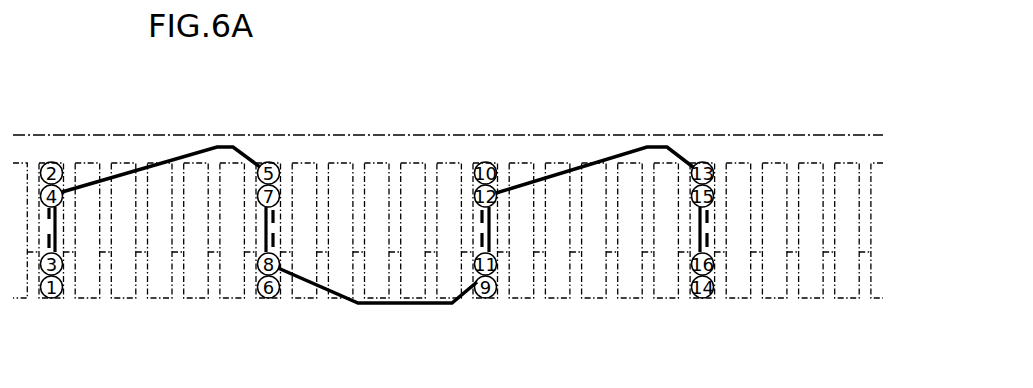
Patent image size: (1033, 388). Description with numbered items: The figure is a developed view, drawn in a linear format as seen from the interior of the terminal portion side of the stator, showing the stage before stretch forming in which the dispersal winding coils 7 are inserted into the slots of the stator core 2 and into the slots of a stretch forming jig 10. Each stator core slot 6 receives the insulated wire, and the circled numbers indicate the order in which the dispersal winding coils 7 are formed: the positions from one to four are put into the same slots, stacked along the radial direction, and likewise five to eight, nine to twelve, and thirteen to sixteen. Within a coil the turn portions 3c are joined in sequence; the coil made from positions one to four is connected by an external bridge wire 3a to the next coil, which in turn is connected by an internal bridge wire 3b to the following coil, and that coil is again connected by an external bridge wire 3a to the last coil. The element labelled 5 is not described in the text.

The stator core 2 is at (138, 146).
The external bridge wire 3a is at (232, 147).
The internal bridge wire 3b is at (370, 305).
The turn portion 3c is at (57, 232).
The slot 5 is at (292, 163).
The stator core slot 6 is at (313, 165).
The dispersal winding coil 7 is at (57, 218).
The stretch forming jig 10 is at (67, 302).